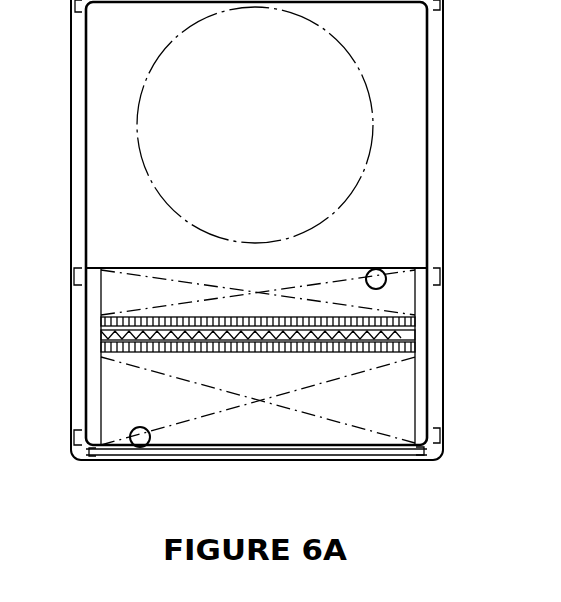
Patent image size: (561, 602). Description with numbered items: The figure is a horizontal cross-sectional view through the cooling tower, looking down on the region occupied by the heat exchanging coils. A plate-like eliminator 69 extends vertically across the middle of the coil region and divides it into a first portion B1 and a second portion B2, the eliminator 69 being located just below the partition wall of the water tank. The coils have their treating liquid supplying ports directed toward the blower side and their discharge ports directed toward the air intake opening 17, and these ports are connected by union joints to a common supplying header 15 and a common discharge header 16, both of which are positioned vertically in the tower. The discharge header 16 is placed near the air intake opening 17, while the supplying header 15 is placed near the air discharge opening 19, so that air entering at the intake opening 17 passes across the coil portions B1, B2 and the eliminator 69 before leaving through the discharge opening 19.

The air discharge opening 19 is at (370, 101).
The supplying header 15 is at (379, 270).
The second portion B2 is at (108, 298).
The eliminator 69 is at (415, 337).
The first portion B1 is at (110, 393).
The discharge header 16 is at (138, 448).
The air intake opening 17 is at (203, 452).